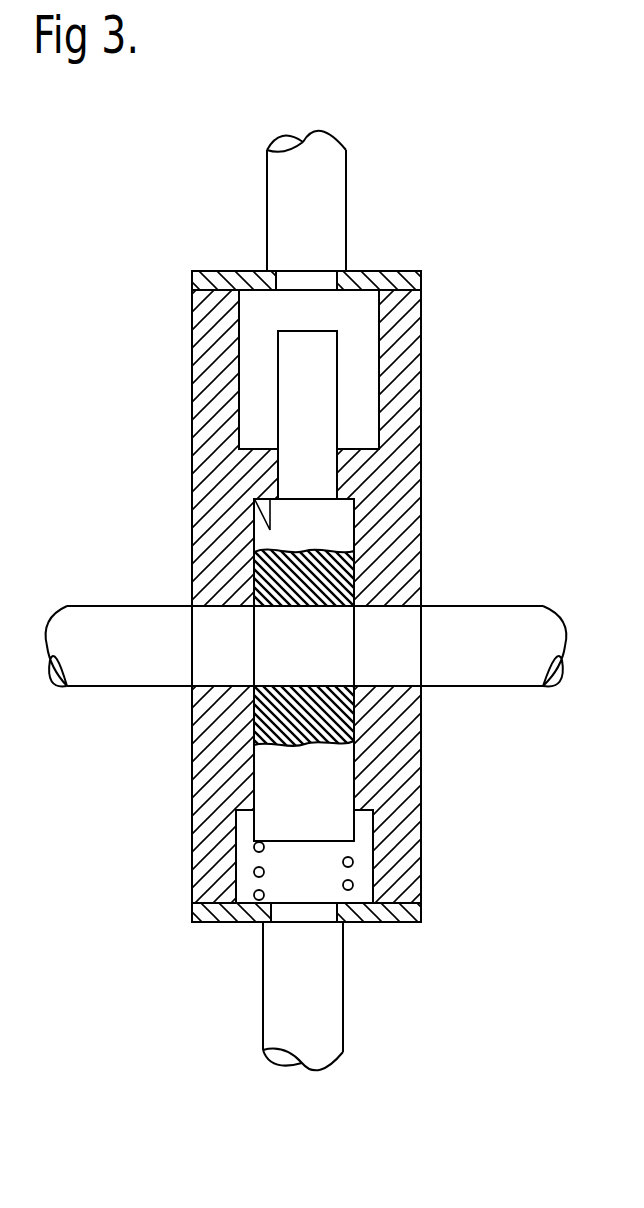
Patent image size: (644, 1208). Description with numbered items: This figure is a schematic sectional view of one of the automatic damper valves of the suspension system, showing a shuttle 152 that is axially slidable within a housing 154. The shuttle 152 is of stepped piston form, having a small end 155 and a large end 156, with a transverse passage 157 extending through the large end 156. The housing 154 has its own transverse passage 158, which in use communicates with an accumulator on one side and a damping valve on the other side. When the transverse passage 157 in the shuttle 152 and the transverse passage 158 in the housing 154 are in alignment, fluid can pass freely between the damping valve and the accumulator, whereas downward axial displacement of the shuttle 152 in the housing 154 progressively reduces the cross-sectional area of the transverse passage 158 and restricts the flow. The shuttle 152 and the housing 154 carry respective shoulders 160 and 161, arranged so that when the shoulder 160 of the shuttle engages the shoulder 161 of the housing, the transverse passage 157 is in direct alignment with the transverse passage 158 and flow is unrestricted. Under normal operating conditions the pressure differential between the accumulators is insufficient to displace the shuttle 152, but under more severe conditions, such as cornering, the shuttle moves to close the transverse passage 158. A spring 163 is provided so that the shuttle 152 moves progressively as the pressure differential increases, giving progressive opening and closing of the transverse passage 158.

The shuttle 152 is at (325, 530).
The housing 154 is at (407, 408).
The small end 155 is at (312, 380).
The large end 156 is at (333, 787).
The transverse passage 157 is at (332, 626).
The transverse passage 158 is at (212, 667).
The shoulder 160 is at (357, 498).
The shoulder 161 is at (270, 530).
The spring 163 is at (259, 877).